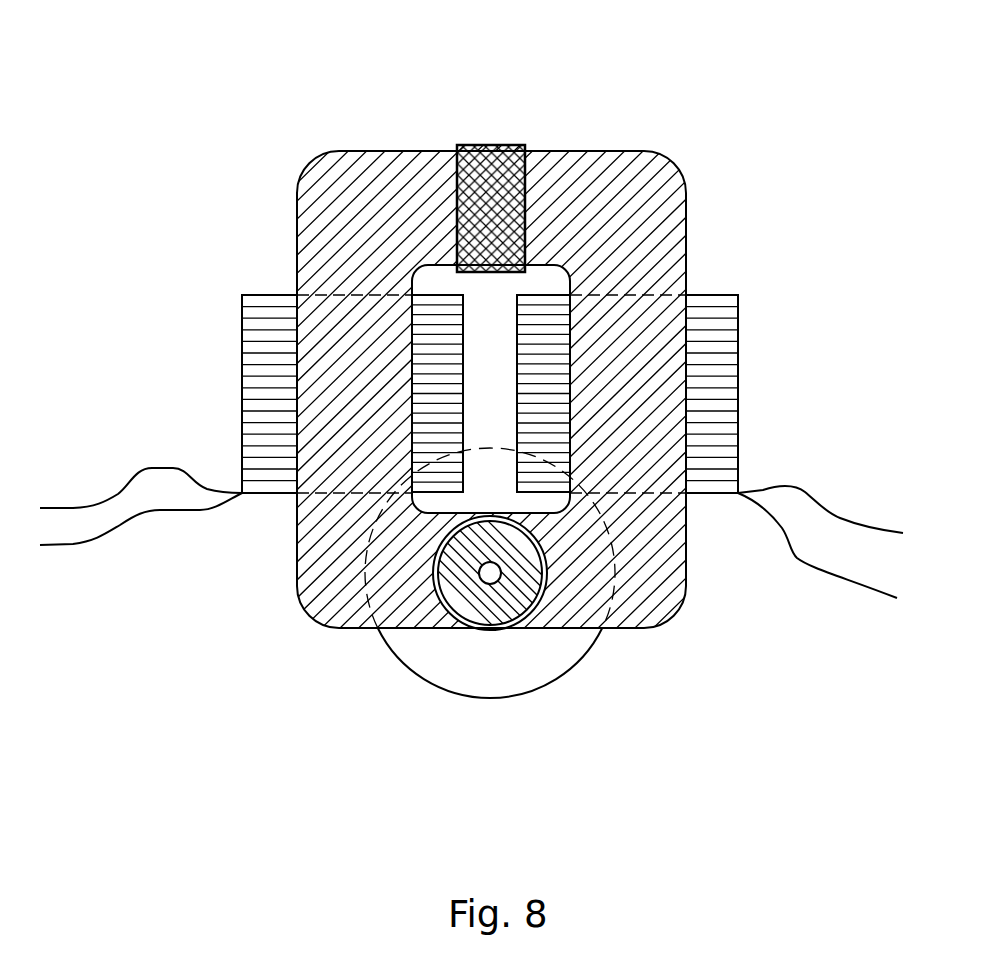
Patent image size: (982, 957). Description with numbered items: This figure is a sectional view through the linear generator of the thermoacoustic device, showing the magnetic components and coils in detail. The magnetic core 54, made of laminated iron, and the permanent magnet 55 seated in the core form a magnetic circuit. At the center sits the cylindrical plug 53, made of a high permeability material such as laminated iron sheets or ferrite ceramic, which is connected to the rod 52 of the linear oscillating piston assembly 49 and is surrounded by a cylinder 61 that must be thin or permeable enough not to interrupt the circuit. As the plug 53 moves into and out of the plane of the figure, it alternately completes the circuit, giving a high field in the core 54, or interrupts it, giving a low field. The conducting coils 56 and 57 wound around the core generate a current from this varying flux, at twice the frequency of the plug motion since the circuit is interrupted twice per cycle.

The linear oscillating piston assembly 49 is at (602, 655).
The rod 52 is at (503, 583).
The cylindrical plug 53 is at (478, 607).
The magnetic core 54 is at (653, 152).
The permanent magnet 55 is at (487, 145).
The conducting coil 56 is at (242, 295).
The conducting coil 57 is at (738, 295).
The cylinder 61 is at (489, 630).